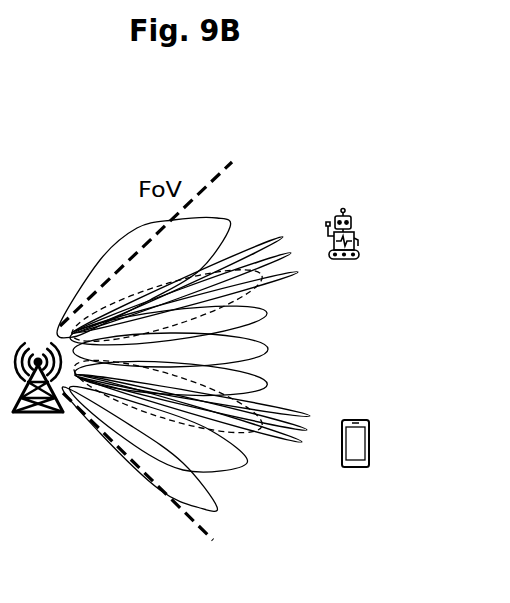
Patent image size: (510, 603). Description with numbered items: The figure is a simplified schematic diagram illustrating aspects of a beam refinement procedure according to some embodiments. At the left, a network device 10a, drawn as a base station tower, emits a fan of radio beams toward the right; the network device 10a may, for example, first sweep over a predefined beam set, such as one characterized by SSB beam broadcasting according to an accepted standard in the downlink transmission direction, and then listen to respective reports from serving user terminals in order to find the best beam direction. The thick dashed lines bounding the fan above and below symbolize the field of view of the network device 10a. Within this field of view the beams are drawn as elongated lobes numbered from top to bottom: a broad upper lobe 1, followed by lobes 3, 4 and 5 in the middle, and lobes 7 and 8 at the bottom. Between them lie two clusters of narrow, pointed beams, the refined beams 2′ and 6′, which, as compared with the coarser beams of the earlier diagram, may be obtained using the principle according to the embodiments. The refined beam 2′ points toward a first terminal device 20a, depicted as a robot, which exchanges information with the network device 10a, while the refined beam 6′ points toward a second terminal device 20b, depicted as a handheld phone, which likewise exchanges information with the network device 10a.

The beam 1 is at (150, 276).
The refined beam 2′ is at (190, 285).
The beam 3 is at (175, 325).
The beam 4 is at (179, 350).
The beam 5 is at (180, 379).
The refined beam 6′ is at (199, 409).
The beam 7 is at (169, 435).
The beam 8 is at (153, 459).
The network device 10a is at (40, 430).
The first terminal device 20a is at (349, 270).
The second terminal device 20b is at (353, 477).